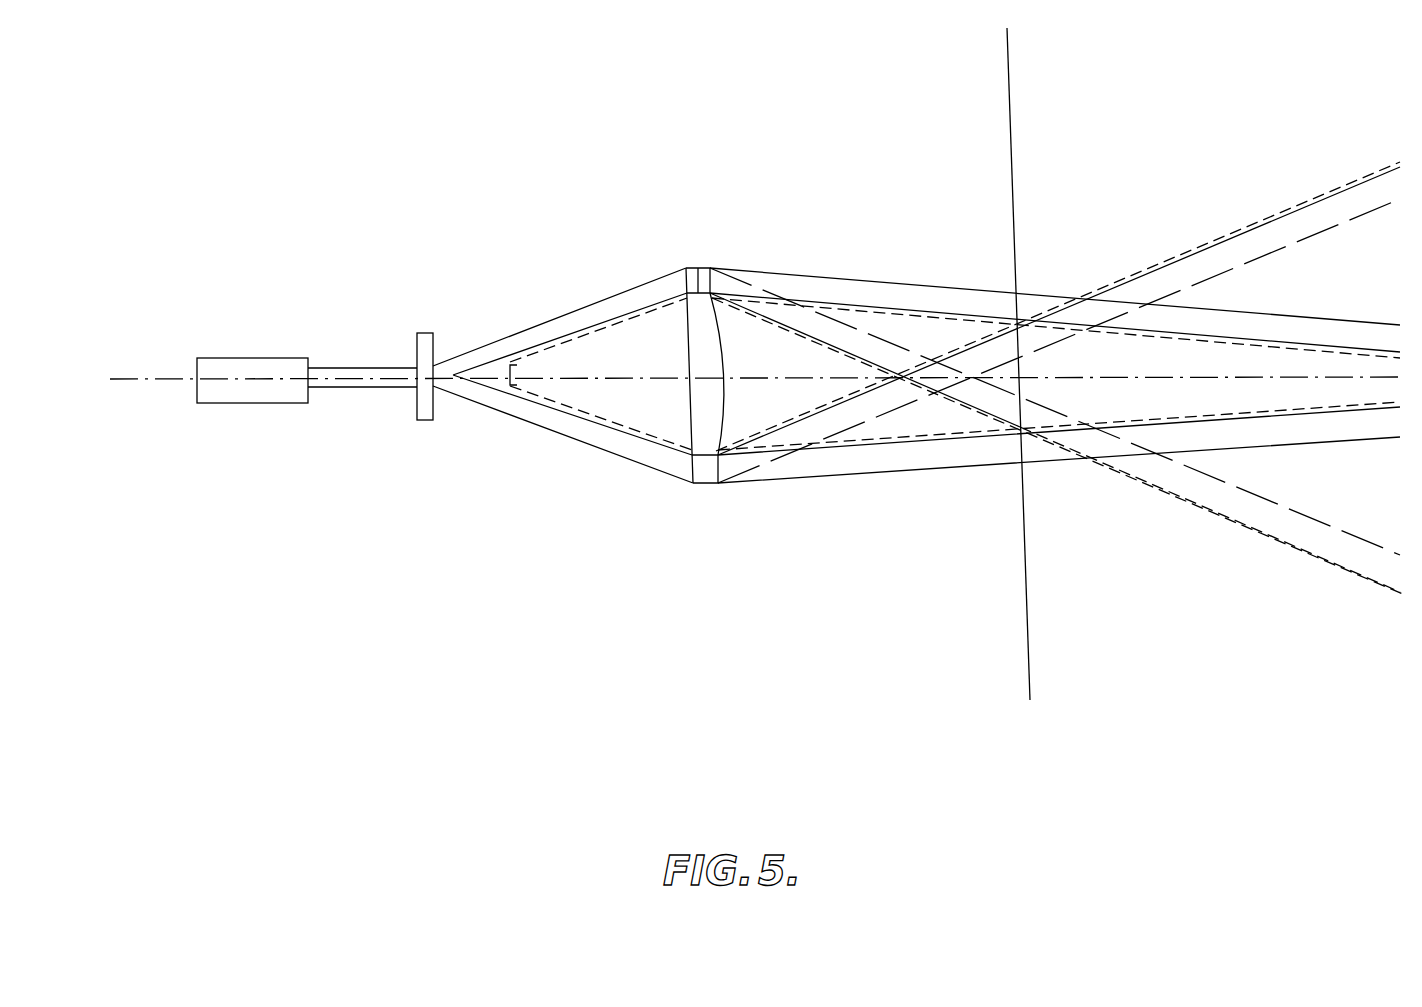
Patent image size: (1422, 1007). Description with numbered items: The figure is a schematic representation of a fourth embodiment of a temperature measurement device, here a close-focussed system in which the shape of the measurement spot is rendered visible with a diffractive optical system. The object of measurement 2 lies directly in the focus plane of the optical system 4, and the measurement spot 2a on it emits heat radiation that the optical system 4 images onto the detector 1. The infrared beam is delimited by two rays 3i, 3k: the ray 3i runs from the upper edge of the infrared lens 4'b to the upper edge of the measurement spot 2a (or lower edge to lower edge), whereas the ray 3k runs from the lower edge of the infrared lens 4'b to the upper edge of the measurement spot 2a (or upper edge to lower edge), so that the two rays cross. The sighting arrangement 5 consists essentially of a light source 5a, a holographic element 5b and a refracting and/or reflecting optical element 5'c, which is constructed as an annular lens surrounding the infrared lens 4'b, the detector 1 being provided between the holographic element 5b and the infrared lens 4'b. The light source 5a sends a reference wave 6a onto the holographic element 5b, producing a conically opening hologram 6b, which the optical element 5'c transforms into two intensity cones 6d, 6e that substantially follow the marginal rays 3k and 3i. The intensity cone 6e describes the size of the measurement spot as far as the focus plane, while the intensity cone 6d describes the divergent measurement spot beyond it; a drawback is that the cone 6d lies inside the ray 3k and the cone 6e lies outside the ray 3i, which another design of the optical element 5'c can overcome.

The detector 1 is at (598, 372).
The object of measurement 2 is at (1018, 641).
The measurement spot 2a is at (1017, 367).
The ray 3i is at (1200, 340).
The ray 3k is at (1150, 478).
The optical system 4 is at (601, 402).
The infrared lens 4'b is at (688, 403).
The sighting arrangement 5 is at (427, 109).
The light source 5a is at (267, 365).
The holographic element 5b is at (422, 340).
The optical element 5'c is at (724, 256).
The reference wave 6a is at (373, 384).
The hologram 6b is at (590, 310).
The intensity cone 6d is at (1188, 273).
The intensity cone 6e is at (1345, 335).